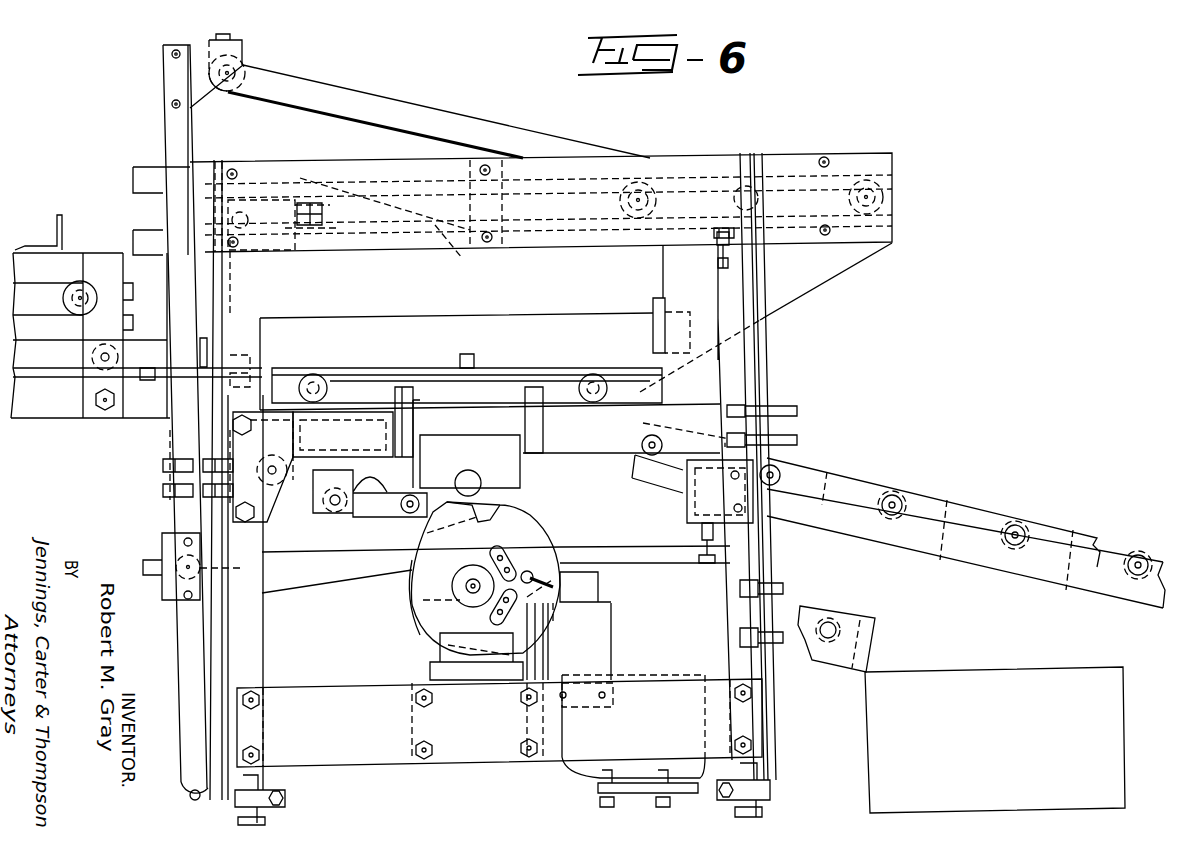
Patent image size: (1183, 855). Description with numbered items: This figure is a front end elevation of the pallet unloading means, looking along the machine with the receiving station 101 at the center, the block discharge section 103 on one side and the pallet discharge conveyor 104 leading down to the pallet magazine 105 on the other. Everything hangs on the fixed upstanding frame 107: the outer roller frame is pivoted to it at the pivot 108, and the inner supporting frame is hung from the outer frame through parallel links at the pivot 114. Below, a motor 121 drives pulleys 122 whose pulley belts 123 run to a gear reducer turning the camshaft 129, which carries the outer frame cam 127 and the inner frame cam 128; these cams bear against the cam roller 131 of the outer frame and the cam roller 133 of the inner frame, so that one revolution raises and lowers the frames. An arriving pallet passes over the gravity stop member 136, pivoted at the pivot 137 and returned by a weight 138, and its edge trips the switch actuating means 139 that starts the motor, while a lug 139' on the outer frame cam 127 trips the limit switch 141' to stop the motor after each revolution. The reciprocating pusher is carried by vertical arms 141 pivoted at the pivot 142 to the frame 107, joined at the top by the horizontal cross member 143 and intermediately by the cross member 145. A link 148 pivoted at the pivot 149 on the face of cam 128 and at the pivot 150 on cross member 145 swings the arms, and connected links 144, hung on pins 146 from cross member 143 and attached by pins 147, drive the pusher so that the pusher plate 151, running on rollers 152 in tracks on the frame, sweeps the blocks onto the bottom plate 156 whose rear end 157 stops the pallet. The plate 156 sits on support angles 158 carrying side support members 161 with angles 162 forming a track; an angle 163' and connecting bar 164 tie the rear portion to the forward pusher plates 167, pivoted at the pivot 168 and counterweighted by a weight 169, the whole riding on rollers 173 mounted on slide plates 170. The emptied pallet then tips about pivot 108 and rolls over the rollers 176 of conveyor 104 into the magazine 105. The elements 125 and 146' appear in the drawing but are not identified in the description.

The receiving station 101 is at (376, 357).
The block discharge section 103 is at (82, 240).
The pallet discharge conveyor 104 is at (959, 501).
The pallet magazine 105 is at (1040, 652).
The upstanding frame 107 is at (262, 630).
The pivot 108 is at (290, 490).
The pivot 114 is at (334, 508).
The motor 121 is at (647, 677).
The pulleys 122 is at (522, 710).
The pulley belts 123 is at (545, 654).
The base 125 is at (440, 649).
The outer frame cam 127 is at (540, 540).
The inner frame cam 128 is at (410, 602).
The camshaft 129 is at (466, 572).
The cam roller 131 is at (455, 484).
The cam roller 133 is at (500, 496).
The stop member 136 is at (540, 368).
The pivot 137 is at (447, 370).
The weight 138 is at (484, 425).
The switch actuating means 139 is at (488, 349).
The lug 139' is at (494, 555).
The vertical arms 141 is at (179, 419).
The limit switch 141' is at (604, 585).
The pivot 142 is at (192, 798).
The horizontal cross member 143 is at (244, 42).
The connected links 144 is at (505, 130).
The cross member 145 is at (166, 536).
The pins 146 is at (236, 91).
The pin 146' is at (542, 568).
The pins 147 is at (760, 200).
The link 148 is at (305, 588).
The pivot 149 is at (518, 607).
The pivot 150 is at (230, 572).
The pusher plate 151 is at (653, 305).
The rollers 152 is at (643, 188).
The bottom plate 156 is at (250, 352).
The rear end 157 is at (250, 368).
The support angles 158 is at (33, 419).
The side support members 161 is at (118, 296).
The angles 162 is at (124, 270).
The angle 163' is at (700, 256).
The connecting bar 164 is at (452, 246).
The pusher plates 167 is at (246, 290).
The pivot 168 is at (262, 200).
The weight 169 is at (292, 205).
The slide plates 170 is at (38, 310).
The rollers 173 is at (62, 299).
The rollers 176 is at (1028, 520).